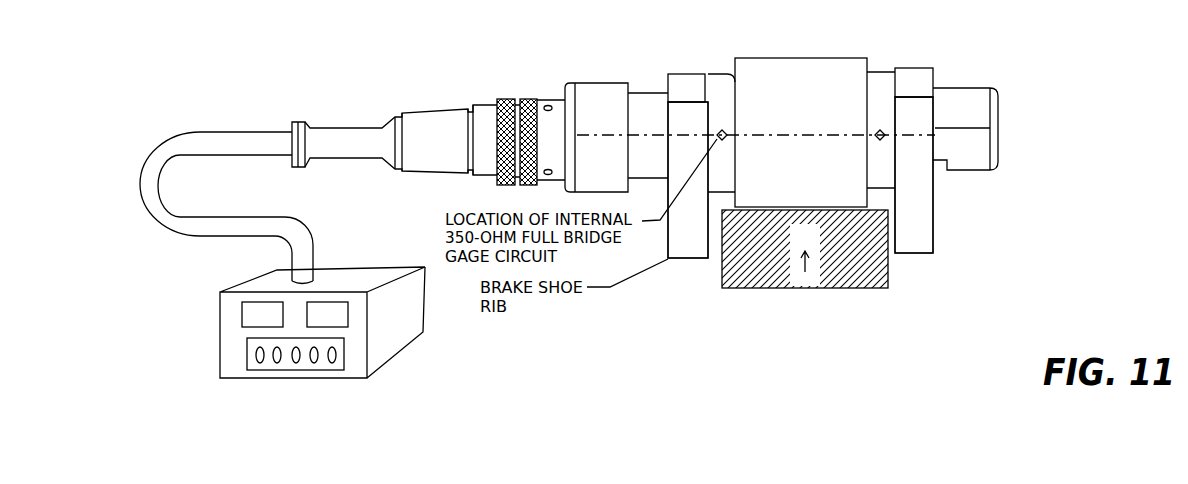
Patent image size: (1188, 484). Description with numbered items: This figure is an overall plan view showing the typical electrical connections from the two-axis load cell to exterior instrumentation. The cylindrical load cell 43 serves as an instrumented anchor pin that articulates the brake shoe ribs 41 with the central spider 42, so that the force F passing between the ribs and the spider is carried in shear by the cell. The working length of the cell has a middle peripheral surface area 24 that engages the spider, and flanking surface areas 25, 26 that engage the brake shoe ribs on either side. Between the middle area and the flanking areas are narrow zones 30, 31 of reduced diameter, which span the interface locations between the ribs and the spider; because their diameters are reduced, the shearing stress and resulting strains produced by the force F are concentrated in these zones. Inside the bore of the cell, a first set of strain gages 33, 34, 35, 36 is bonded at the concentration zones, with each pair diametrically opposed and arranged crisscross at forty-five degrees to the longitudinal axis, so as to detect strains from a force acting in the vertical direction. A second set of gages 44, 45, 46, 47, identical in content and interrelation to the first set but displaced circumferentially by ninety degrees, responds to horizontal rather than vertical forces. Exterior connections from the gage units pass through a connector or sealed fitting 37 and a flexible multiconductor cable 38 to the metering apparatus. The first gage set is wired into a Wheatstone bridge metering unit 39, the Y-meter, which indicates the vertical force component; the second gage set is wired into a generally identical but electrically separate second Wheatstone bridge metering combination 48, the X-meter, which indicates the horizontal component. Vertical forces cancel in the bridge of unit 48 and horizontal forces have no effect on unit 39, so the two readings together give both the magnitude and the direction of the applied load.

The middle peripheral surface area 24 is at (800, 58).
The flanking surface area 25 is at (687, 74).
The flanking surface area 26 is at (920, 77).
The zone of reduced diameter 30 is at (886, 68).
The zone of reduced diameter 31 is at (723, 72).
The strain gage 33 is at (764, 159).
The strain gage 34 is at (764, 159).
The strain gage 35 is at (838, 105).
The strain gage 36 is at (838, 105).
The connector 37 is at (545, 100).
The flexible multiconductor cable 38 is at (200, 131).
The Wheatstone bridge metering unit 39 is at (242, 313).
The brake shoe rib 41 is at (936, 240).
The central spider 42 is at (818, 290).
The cylindrical load cell 43 is at (598, 83).
The strain gage 44 is at (764, 159).
The strain gage 45 is at (724, 138).
The strain gage 46 is at (838, 105).
The strain gage 47 is at (880, 128).
The second Wheatstone bridge metering combination 48 is at (348, 310).
The force F is at (295, 370).